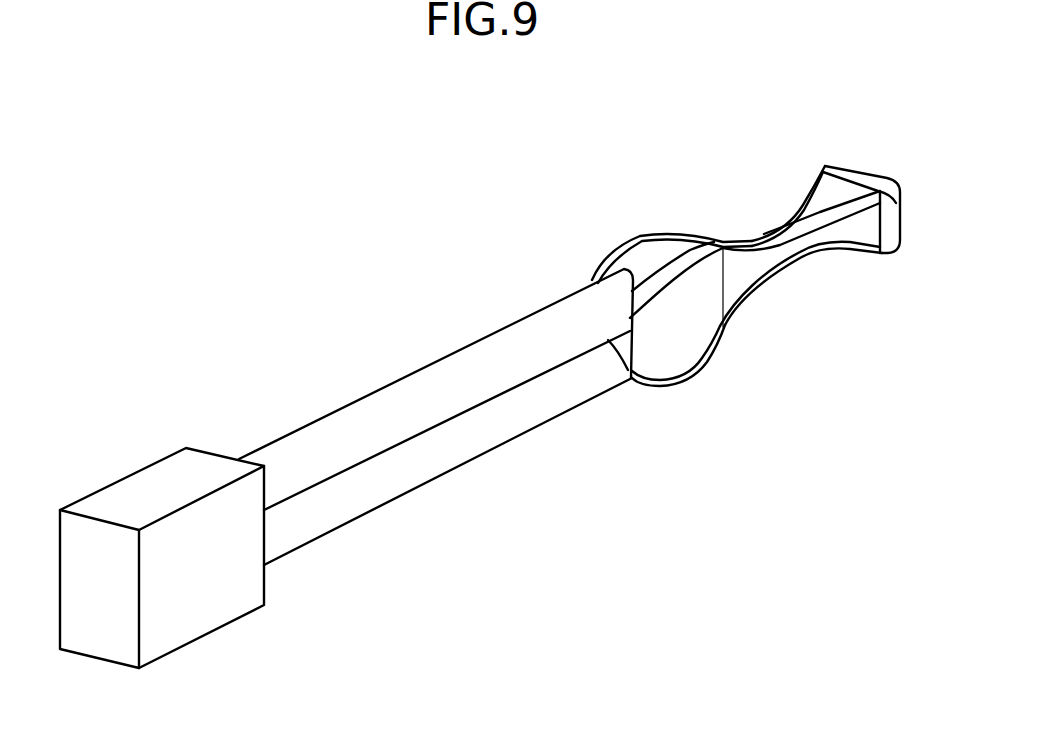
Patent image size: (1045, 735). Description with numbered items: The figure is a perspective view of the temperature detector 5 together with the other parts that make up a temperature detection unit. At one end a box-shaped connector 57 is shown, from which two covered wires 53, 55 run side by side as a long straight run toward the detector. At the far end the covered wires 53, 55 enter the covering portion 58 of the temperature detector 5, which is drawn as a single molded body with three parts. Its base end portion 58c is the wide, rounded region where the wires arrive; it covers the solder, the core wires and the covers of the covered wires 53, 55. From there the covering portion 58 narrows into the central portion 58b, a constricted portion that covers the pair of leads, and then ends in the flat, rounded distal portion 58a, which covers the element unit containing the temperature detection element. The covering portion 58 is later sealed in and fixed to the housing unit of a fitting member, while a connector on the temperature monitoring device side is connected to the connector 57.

The temperature detector 5 is at (577, 157).
The covered wire 53 is at (428, 366).
The covered wire 55 is at (447, 473).
The connector 57 is at (152, 488).
The covering portion 58 is at (809, 92).
The distal portion 58a is at (843, 185).
The central portion 58b is at (768, 240).
The base end portion 58c is at (653, 243).